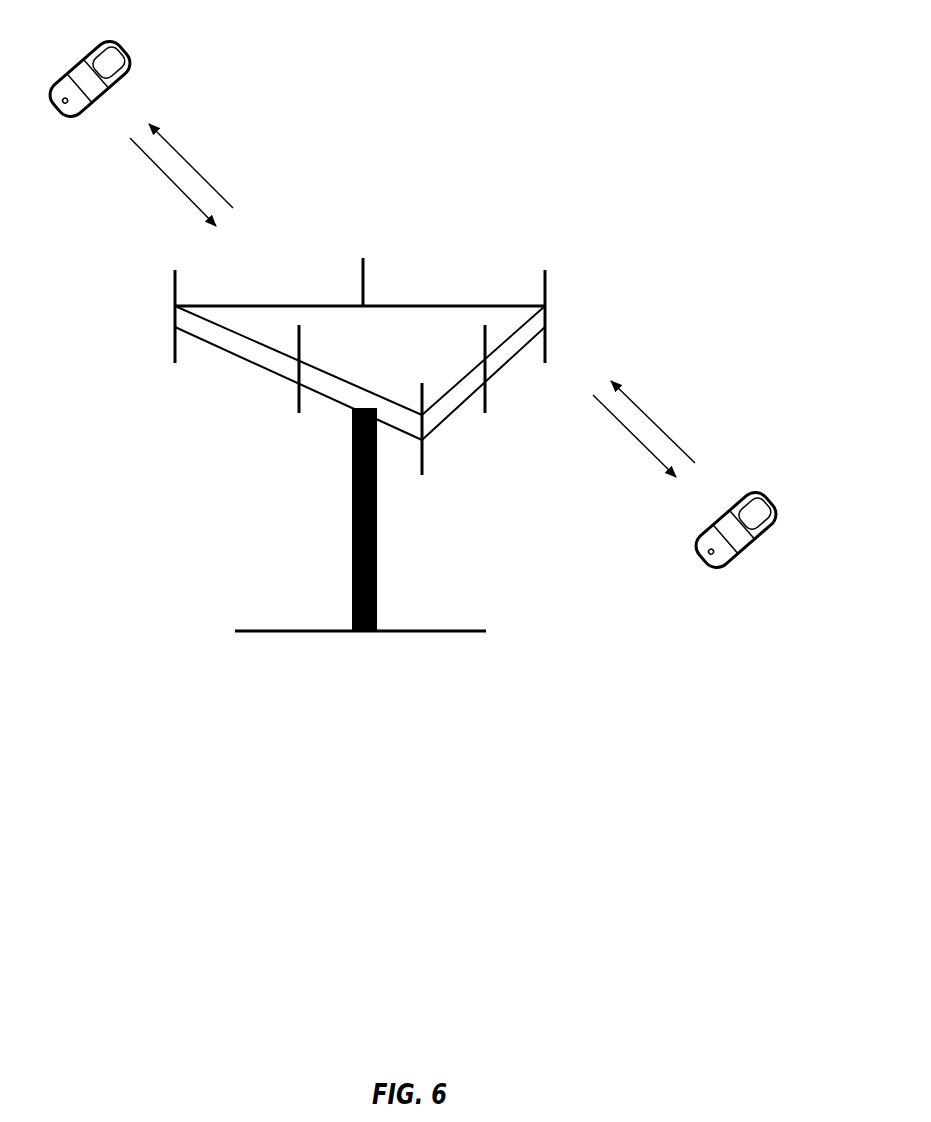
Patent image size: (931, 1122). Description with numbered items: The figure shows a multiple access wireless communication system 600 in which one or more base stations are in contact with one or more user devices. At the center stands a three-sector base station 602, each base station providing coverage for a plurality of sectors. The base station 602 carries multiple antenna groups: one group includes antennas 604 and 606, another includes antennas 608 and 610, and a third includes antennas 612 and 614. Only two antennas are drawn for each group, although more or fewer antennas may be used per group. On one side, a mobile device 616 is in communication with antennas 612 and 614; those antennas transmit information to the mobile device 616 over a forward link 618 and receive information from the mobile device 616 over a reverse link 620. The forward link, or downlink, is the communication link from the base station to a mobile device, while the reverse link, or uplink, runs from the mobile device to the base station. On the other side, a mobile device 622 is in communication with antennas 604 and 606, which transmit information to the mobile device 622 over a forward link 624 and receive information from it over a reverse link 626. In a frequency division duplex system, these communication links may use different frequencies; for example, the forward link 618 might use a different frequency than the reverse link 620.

The multiple access wireless communication system 600 is at (692, 104).
The three-sector base station 602 is at (400, 632).
The antenna 604 is at (548, 276).
The antenna 606 is at (487, 412).
The antenna 608 is at (424, 456).
The antenna 610 is at (298, 414).
The antenna 612 is at (178, 272).
The antenna 614 is at (366, 262).
The mobile device 616 is at (125, 42).
The forward link 618 is at (193, 167).
The reverse link 620 is at (168, 170).
The mobile device 622 is at (770, 490).
The forward link 624 is at (638, 445).
The reverse link 626 is at (640, 413).